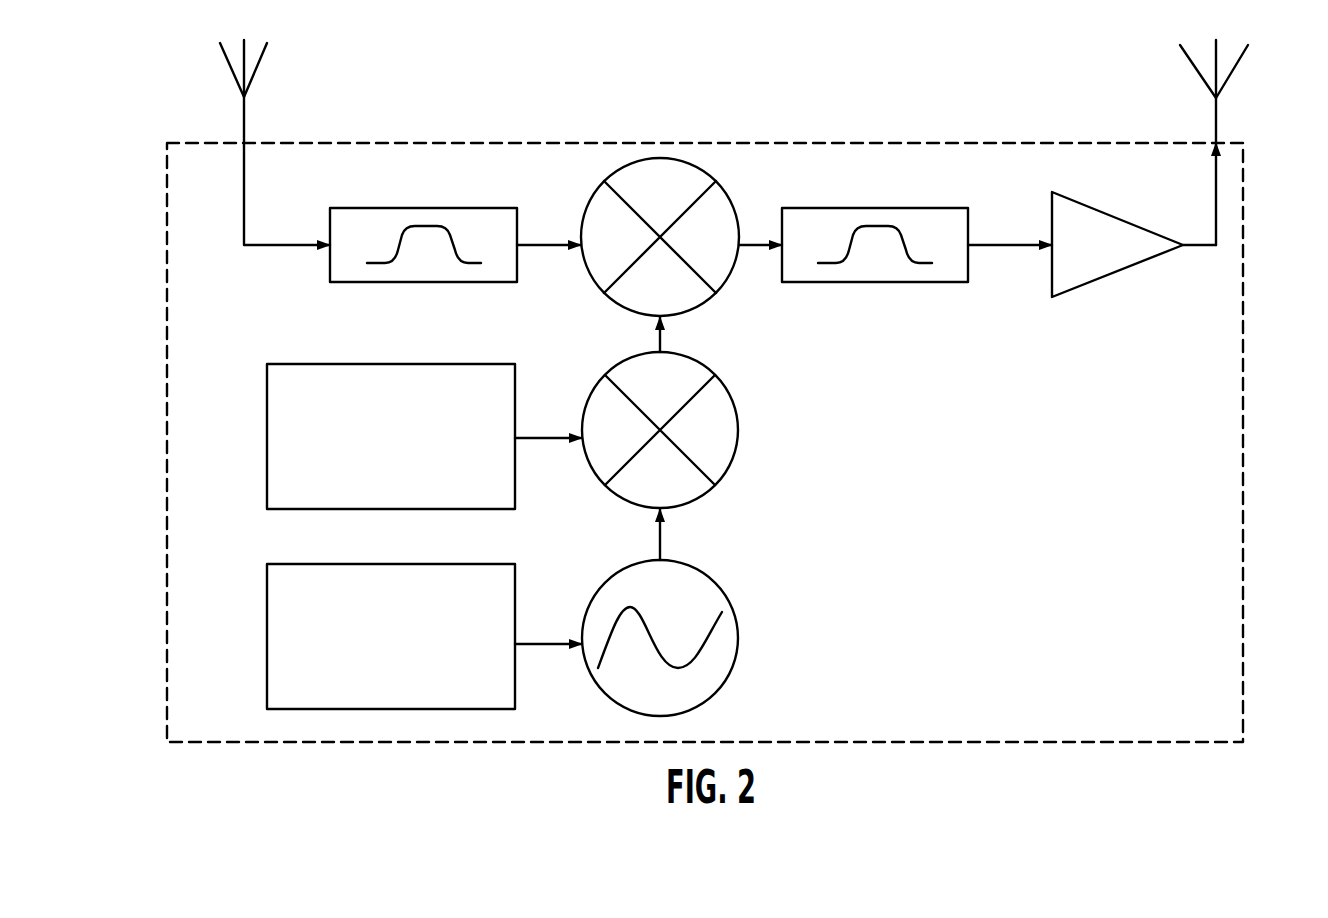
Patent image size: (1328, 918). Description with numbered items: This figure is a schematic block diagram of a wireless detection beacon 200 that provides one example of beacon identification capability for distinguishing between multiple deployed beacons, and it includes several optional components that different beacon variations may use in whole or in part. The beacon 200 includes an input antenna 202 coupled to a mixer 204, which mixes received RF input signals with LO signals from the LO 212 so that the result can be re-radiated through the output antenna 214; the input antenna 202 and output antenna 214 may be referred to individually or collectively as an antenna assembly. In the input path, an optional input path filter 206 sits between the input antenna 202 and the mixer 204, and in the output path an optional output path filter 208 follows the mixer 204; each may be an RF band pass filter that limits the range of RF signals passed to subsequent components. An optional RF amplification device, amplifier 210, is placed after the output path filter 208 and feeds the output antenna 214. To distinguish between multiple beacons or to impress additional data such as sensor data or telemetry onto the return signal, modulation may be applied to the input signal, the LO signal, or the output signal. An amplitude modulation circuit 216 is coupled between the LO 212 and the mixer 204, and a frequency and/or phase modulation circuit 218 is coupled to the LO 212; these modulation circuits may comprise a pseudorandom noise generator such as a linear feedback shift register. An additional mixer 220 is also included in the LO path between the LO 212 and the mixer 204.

The beacon 200 is at (553, 142).
The input antenna 202 is at (244, 118).
The mixer 204 is at (702, 306).
The input path filter 206 is at (330, 270).
The output path filter 208 is at (918, 282).
The amplifier 210 is at (1088, 283).
The LO 212 is at (632, 713).
The output antenna 214 is at (1216, 115).
The amplitude modulation circuit 216 is at (267, 412).
The frequency and/or phase modulation circuit 218 is at (267, 597).
The additional mixer 220 is at (731, 471).